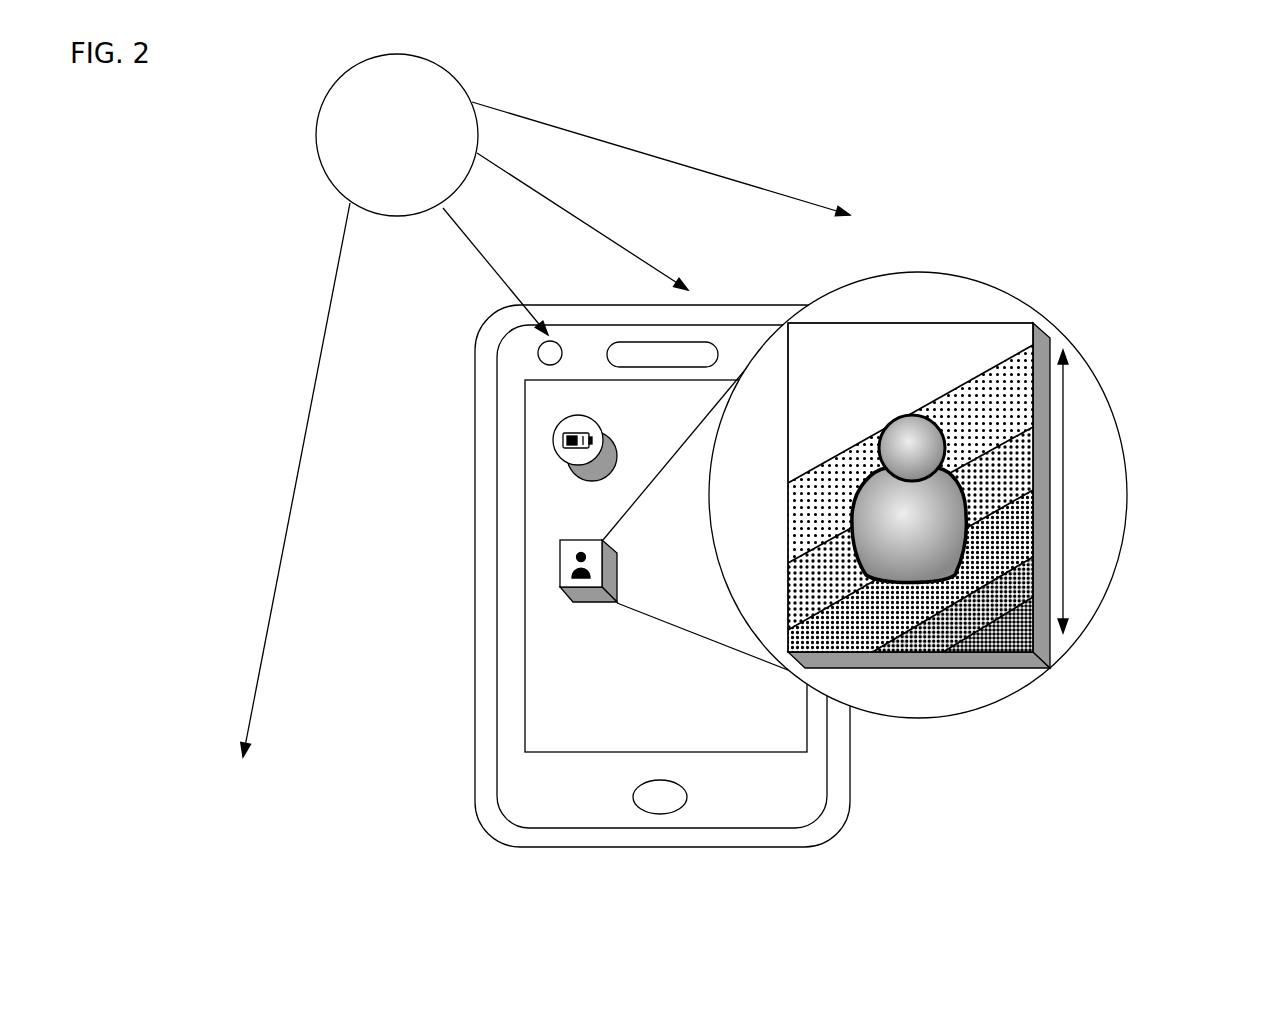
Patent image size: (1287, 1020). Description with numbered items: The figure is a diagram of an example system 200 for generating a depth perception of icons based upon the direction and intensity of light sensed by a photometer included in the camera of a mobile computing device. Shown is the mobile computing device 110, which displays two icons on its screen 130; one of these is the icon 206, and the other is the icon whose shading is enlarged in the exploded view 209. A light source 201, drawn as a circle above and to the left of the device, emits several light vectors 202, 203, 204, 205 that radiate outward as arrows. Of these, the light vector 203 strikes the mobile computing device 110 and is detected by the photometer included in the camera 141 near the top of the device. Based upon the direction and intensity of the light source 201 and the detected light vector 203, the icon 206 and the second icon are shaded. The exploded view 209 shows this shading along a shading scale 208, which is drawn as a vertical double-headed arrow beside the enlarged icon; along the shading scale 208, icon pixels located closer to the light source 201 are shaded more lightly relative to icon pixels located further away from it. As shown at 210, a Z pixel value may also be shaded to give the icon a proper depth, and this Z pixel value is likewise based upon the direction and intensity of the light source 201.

The system 200 is at (1178, 74).
The light source 201 is at (397, 135).
The light vector 202 is at (293, 504).
The light vector 203 is at (476, 260).
The light vector 204 is at (613, 212).
The light vector 205 is at (635, 147).
The mobile computing device 110 is at (476, 537).
The camera 141 is at (550, 365).
The screen 130 is at (598, 752).
The icon 206 is at (562, 463).
The shading scale 208 is at (1067, 453).
The exploded view 209 is at (1053, 665).
The Z pixel value 210 is at (850, 657).